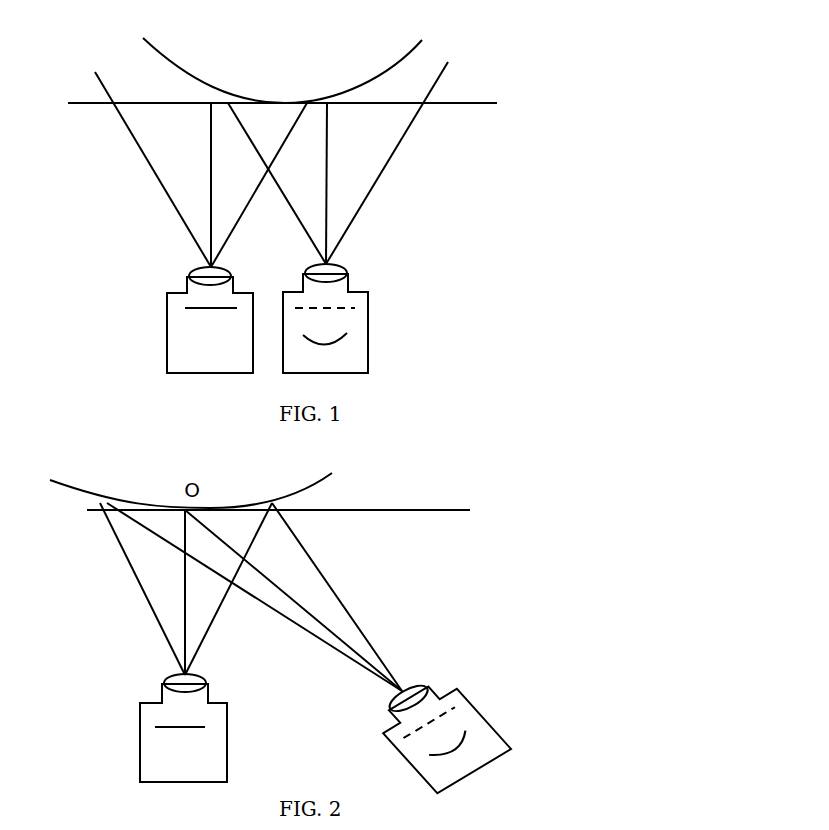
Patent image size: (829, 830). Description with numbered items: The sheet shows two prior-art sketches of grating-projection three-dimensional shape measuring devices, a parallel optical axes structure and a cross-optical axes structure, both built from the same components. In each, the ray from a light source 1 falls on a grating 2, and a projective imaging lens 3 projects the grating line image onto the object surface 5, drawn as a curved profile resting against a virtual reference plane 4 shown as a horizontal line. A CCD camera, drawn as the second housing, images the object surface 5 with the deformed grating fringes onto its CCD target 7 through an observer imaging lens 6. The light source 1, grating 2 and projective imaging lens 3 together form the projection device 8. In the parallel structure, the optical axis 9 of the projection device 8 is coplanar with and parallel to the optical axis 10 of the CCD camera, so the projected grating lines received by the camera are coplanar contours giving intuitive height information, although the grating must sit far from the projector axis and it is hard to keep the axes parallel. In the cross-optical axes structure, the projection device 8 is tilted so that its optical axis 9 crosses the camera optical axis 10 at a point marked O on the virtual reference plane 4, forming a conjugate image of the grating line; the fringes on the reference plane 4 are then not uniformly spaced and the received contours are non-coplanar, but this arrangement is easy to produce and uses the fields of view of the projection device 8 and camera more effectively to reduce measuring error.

In FIG. 1, the light source 1 is at (325, 337).
In FIG. 2, the light source 1 is at (468, 735).
In FIG. 1, the grating 2 is at (357, 302).
In FIG. 2, the grating 2 is at (458, 698).
In FIG. 1, the projective imaging lens 3 is at (332, 273).
In FIG. 2, the projective imaging lens 3 is at (413, 685).
In FIG. 1, the virtual reference plane 4 is at (296, 103).
In FIG. 2, the virtual reference plane 4 is at (303, 503).
In FIG. 1, the object surface 5 is at (282, 70).
In FIG. 2, the object surface 5 is at (191, 479).
In FIG. 1, the observer imaging lens 6 is at (213, 276).
In FIG. 2, the observer imaging lens 6 is at (190, 685).
In FIG. 1, the CCD target 7 is at (205, 306).
In FIG. 2, the CCD target 7 is at (203, 726).
In FIG. 1, the projection device 8 is at (360, 305).
In FIG. 2, the projection device 8 is at (470, 712).
In FIG. 1, the optical axis of projection device 9 is at (328, 193).
In FIG. 2, the optical axis of projection device 9 is at (310, 615).
In FIG. 1, the optical axis of CCD camera 10 is at (209, 183).
In FIG. 2, the optical axis of CCD camera 10 is at (185, 595).